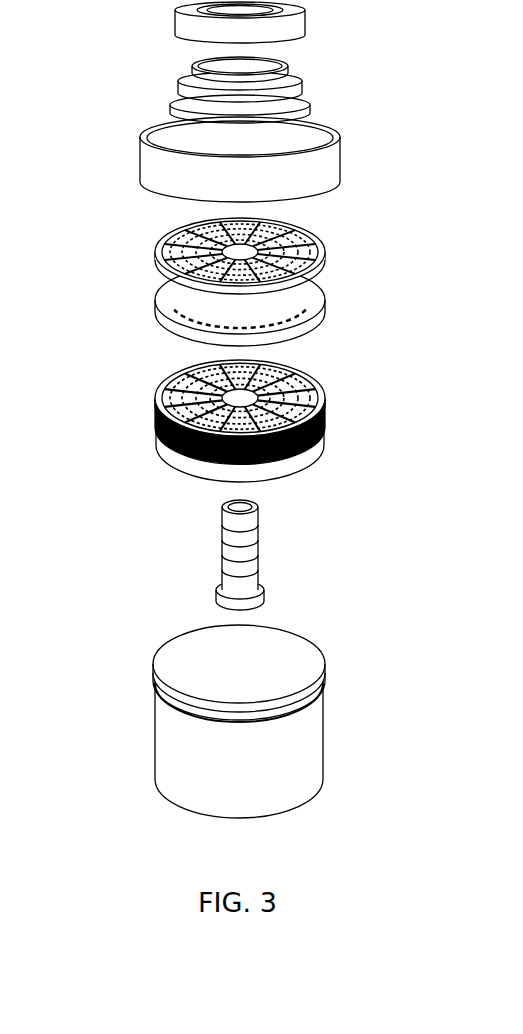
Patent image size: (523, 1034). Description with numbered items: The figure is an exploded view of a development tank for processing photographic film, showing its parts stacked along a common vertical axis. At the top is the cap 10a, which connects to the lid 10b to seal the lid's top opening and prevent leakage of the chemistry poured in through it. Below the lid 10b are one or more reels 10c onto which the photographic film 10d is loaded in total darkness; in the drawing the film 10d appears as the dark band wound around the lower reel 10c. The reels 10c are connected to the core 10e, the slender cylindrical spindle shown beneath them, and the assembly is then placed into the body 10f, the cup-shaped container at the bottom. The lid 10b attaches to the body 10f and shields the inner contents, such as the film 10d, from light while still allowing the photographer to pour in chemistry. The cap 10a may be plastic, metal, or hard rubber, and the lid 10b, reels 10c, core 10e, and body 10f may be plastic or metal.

The cap 10a is at (163, 18).
The lid 10b is at (137, 154).
The reels 10c is at (325, 267).
The photographic film 10d is at (163, 432).
The core 10e is at (204, 581).
The body 10f is at (148, 750).